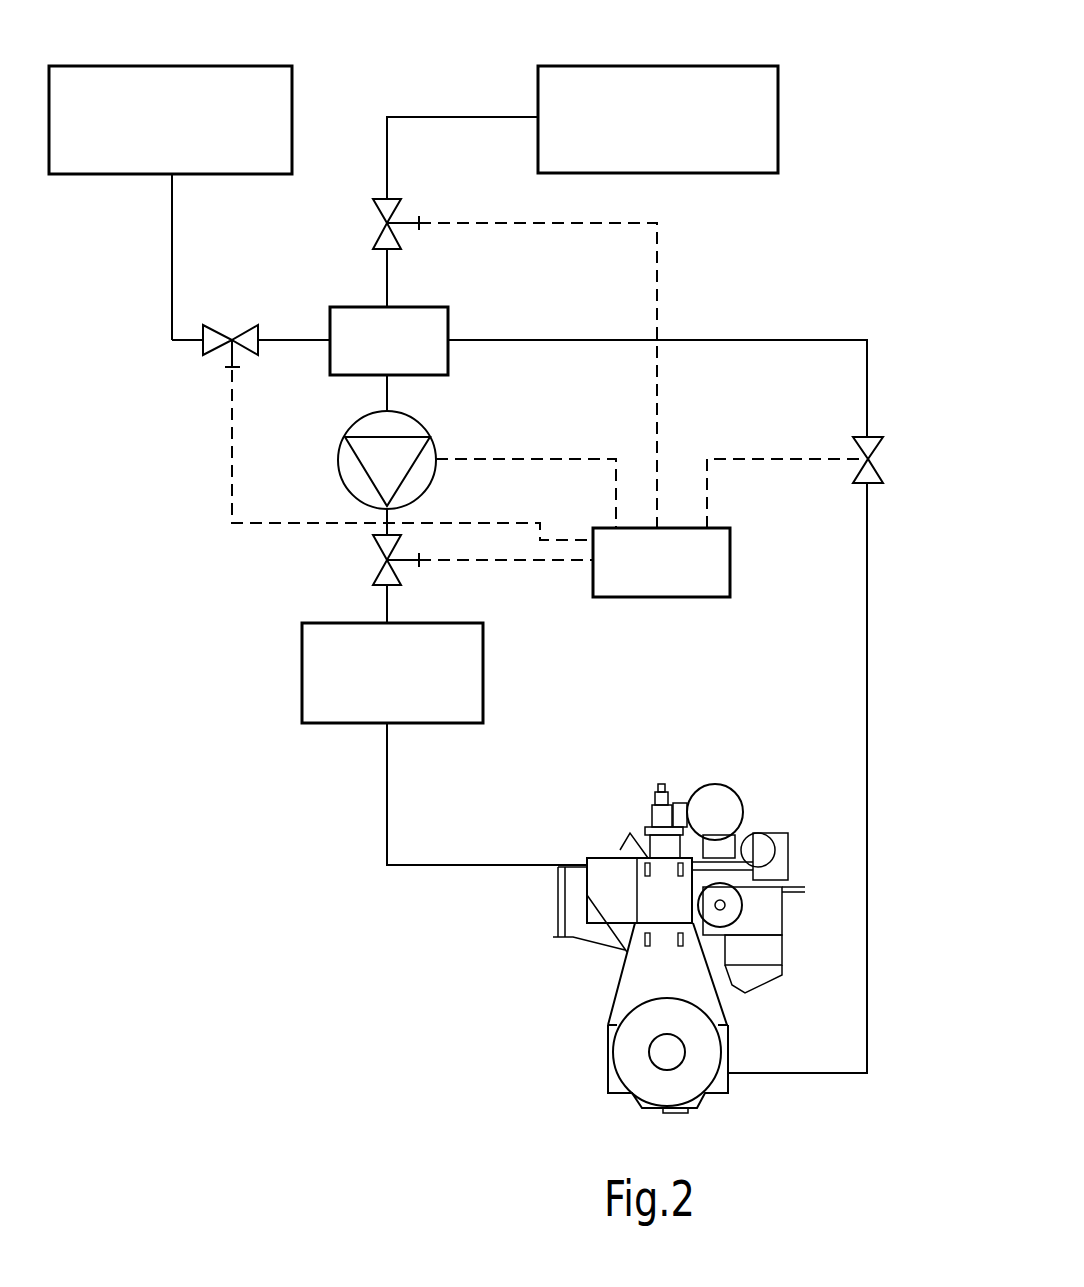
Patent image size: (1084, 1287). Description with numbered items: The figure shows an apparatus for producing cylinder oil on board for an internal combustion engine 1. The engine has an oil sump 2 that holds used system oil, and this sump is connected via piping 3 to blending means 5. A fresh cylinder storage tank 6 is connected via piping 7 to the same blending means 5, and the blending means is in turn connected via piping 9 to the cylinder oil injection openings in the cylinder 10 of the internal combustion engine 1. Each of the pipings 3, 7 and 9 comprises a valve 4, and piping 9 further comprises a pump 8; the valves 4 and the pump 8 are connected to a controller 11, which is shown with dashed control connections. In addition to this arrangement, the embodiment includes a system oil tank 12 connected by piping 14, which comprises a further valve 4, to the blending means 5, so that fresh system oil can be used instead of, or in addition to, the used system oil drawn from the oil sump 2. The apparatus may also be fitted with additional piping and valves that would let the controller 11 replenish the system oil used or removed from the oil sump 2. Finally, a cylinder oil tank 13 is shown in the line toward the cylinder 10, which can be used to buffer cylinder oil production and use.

The internal combustion engine 1 is at (556, 977).
The oil sump 2 is at (703, 1095).
The piping 3 is at (868, 712).
The valve 4 is at (384, 225).
The blending means 5 is at (330, 367).
The fresh cylinder storage tank 6 is at (778, 117).
The piping 7 is at (387, 158).
The pump 8 is at (345, 440).
The piping 9 is at (385, 605).
The cylinder 10 is at (640, 850).
The controller 11 is at (730, 582).
The system oil tank 12 is at (292, 110).
The cylinder oil tank 13 is at (302, 687).
The piping 14 is at (283, 340).